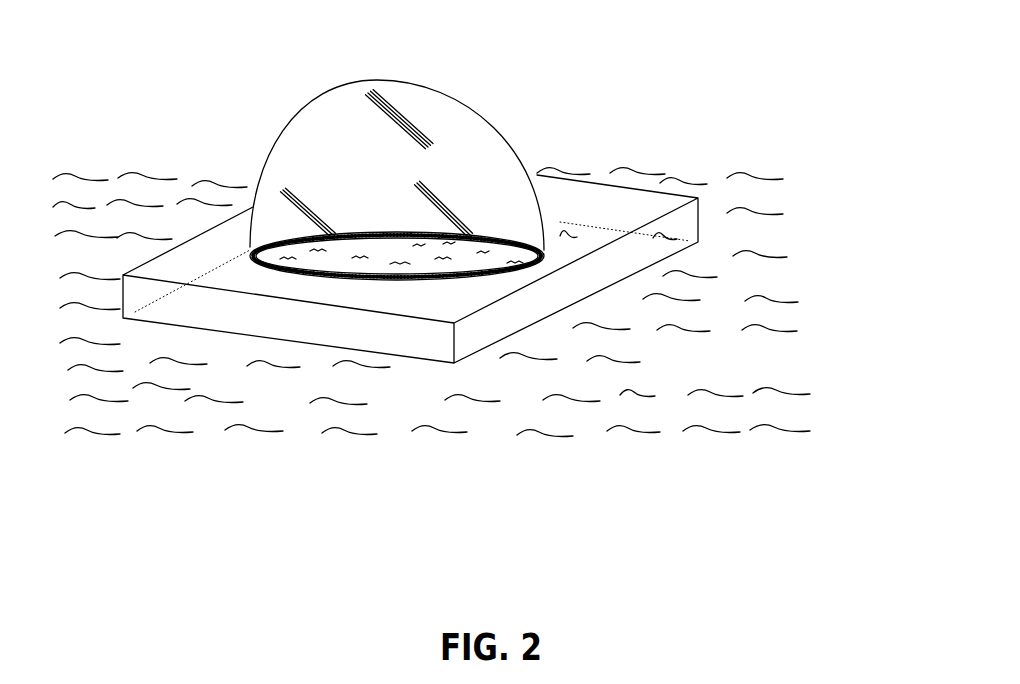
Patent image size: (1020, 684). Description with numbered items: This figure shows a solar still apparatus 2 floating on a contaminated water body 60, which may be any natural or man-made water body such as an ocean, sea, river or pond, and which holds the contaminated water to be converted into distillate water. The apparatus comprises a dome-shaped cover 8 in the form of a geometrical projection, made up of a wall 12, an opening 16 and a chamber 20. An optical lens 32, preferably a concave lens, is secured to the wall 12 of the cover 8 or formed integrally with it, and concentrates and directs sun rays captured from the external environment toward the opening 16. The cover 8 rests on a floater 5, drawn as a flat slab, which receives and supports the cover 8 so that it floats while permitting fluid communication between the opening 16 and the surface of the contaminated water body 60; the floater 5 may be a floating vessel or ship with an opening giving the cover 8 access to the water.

The solar still apparatus 2 is at (253, 107).
The floater 5 is at (210, 250).
The cover 8 is at (470, 65).
The wall 12 is at (476, 104).
The opening 16 is at (505, 229).
The chamber 20 is at (422, 138).
The optical lens 32 is at (258, 183).
The contaminated water body 60 is at (657, 364).